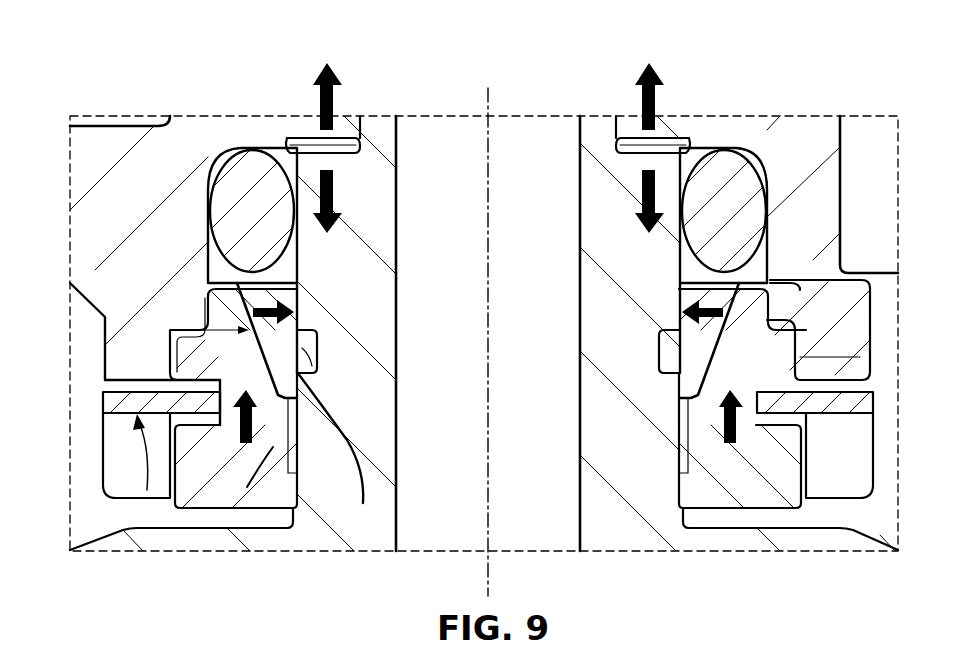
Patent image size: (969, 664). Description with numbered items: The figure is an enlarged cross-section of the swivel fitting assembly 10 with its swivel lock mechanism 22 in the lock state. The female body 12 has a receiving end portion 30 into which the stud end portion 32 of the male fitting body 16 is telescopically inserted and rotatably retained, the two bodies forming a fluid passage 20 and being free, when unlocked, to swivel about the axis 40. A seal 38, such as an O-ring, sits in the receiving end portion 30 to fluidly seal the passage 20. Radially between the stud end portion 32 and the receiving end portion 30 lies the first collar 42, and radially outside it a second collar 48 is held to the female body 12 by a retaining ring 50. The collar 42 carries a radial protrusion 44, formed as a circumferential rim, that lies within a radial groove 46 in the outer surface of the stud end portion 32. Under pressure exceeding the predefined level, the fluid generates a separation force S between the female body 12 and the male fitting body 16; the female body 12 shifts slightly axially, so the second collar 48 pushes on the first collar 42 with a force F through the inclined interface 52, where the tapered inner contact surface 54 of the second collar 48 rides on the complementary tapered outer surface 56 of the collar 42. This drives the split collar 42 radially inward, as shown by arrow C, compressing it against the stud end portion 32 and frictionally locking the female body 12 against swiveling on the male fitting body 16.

The swivel fitting assembly 10 is at (118, 64).
The female body 12 is at (220, 106).
The separation force S is at (290, 148).
The stud end portion 32 is at (374, 166).
The seal 38 is at (723, 195).
The collar 42 is at (267, 297).
The swivel lock mechanism 22 is at (120, 344).
The radially inward force arrow C is at (297, 270).
The radially outer contact surface 56 is at (898, 273).
The interface 52 is at (740, 298).
The radially inner contact surface 54 is at (745, 352).
The retaining ring 50 is at (873, 400).
The receiving end portion 30 is at (110, 500).
The force F is at (200, 507).
The second collar 48 is at (257, 480).
The radial protrusion 44 is at (297, 377).
The radial groove 46 is at (363, 503).
The fluid passage 20 is at (450, 457).
The axis 40 is at (490, 535).
The male fitting body 16 is at (642, 532).